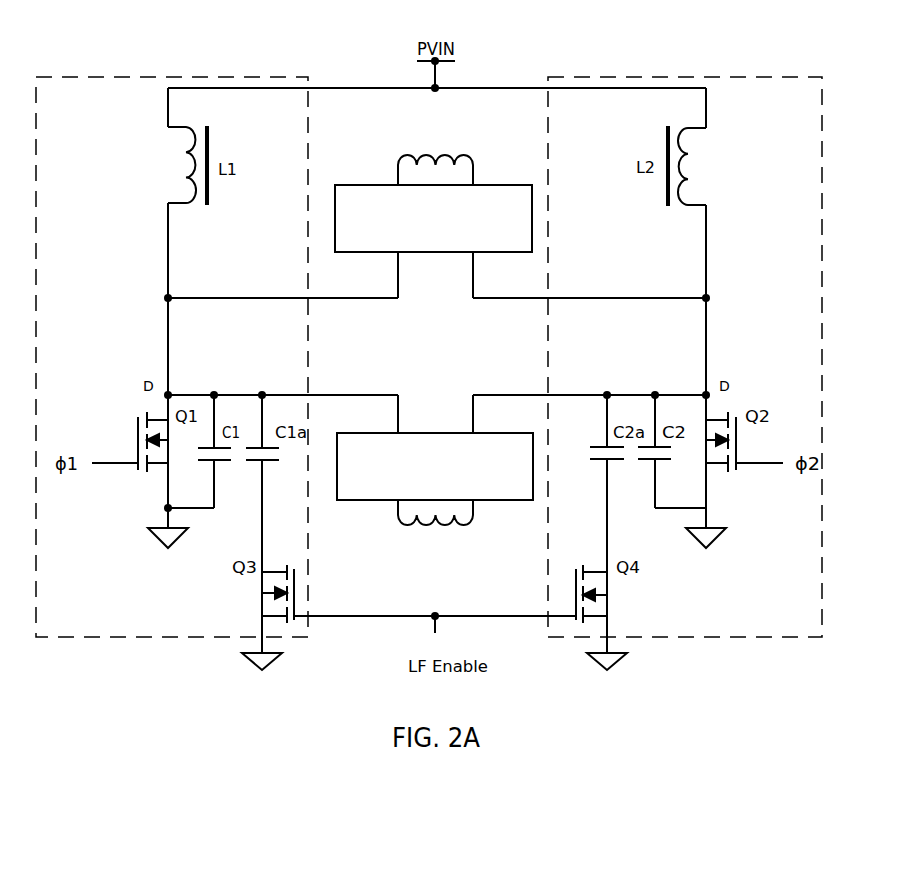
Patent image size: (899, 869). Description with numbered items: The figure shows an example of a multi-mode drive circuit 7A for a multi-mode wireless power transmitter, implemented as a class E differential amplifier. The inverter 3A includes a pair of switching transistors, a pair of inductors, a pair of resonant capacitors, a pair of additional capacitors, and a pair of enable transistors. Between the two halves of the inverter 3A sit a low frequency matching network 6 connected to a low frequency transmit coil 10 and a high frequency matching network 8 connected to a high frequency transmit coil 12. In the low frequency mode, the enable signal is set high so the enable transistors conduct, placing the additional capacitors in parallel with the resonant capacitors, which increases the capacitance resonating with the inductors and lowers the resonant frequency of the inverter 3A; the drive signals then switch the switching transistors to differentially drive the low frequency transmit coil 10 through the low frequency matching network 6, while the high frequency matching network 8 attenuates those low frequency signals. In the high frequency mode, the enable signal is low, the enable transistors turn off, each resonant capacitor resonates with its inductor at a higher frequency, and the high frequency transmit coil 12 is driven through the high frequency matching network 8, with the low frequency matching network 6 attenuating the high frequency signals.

The multi-mode drive circuit 7A is at (88, 57).
The inverter 3A is at (88, 113).
The low frequency matching network 6 is at (372, 185).
The high frequency matching network 8 is at (463, 433).
The low frequency transmit coil 10 is at (476, 165).
The high frequency transmit coil 12 is at (470, 515).